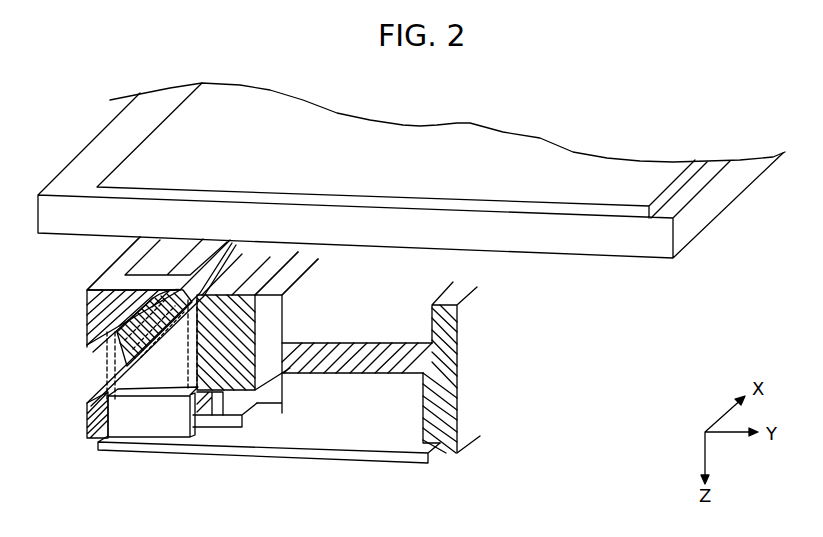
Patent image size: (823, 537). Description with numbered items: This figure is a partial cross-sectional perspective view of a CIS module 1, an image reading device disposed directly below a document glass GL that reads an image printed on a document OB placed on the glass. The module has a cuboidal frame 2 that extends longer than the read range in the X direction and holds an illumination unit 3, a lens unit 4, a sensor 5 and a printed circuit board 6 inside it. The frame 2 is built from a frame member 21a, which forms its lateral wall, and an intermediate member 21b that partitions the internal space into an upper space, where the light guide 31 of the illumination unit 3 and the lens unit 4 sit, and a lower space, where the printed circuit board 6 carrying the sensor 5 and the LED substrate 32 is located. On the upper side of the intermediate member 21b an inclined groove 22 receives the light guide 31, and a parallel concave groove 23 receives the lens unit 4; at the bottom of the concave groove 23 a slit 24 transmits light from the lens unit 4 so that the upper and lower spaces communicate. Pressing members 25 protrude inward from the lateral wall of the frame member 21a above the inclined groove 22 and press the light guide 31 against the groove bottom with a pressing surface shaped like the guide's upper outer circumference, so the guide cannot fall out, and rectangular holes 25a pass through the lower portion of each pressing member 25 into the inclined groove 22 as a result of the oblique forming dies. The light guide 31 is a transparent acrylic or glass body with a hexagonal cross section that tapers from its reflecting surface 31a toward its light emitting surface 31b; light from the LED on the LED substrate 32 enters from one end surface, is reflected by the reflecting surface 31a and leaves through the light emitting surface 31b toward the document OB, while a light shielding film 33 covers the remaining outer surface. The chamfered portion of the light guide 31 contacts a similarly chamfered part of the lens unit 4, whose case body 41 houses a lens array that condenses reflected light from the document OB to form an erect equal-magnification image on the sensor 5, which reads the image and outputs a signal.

The CIS module 1 is at (643, 309).
The frame 2 is at (525, 367).
The illumination unit 3 is at (117, 370).
The lens unit 4 is at (268, 235).
The sensor 5 is at (223, 417).
The printed circuit board 6 is at (381, 438).
The frame member 21a is at (455, 410).
The intermediate member 21b is at (323, 353).
The inclined groove 22 is at (97, 382).
The concave groove 23 is at (252, 383).
The slit 24 is at (215, 393).
The pressing member 25 is at (122, 281).
The rectangular hole 25a is at (121, 357).
The light guide 31 is at (258, 258).
The reflecting surface 31a is at (130, 327).
The light emitting surface 31b is at (212, 250).
The LED substrate 32 is at (150, 428).
The light shielding film 33 is at (87, 437).
The case body 41 is at (293, 242).
The document OB is at (578, 165).
The document glass GL is at (725, 190).